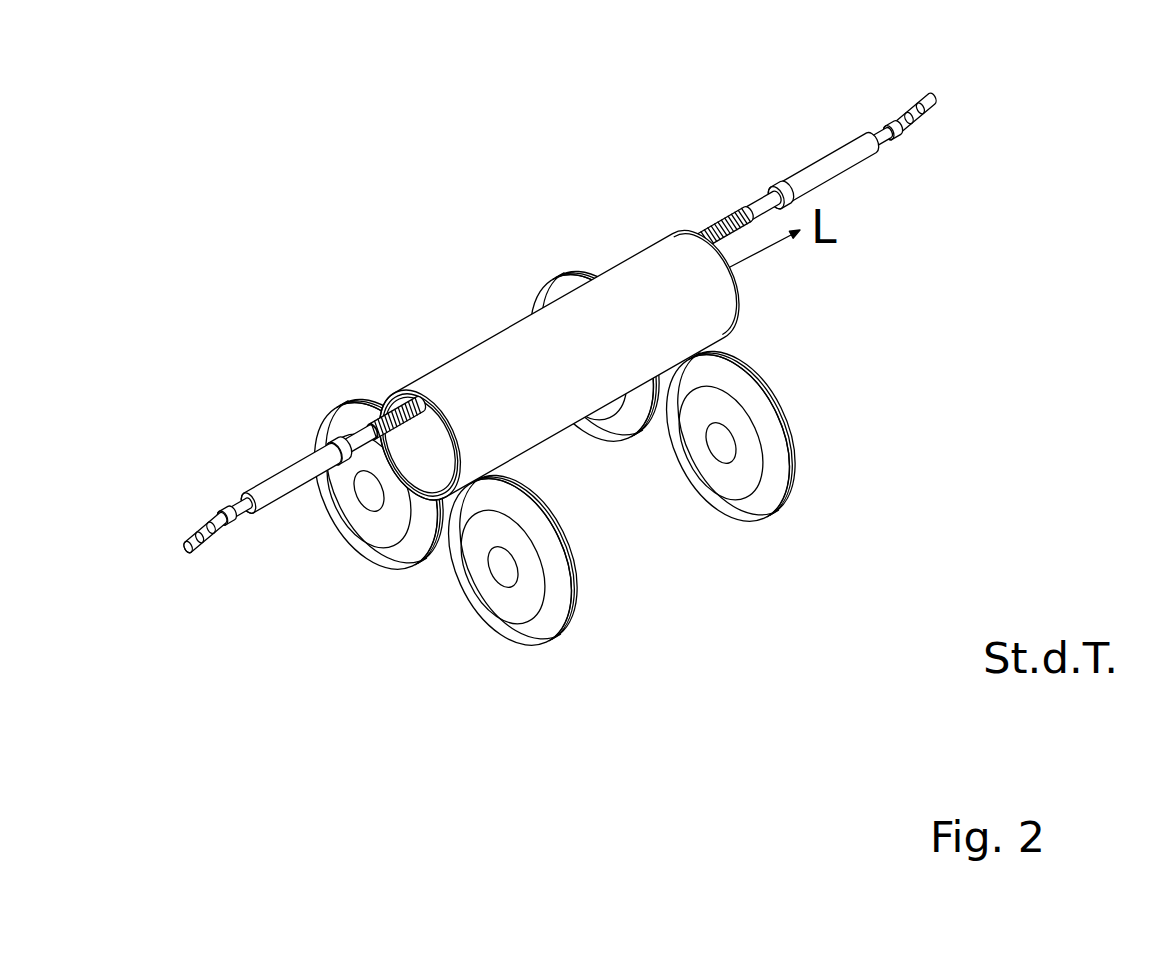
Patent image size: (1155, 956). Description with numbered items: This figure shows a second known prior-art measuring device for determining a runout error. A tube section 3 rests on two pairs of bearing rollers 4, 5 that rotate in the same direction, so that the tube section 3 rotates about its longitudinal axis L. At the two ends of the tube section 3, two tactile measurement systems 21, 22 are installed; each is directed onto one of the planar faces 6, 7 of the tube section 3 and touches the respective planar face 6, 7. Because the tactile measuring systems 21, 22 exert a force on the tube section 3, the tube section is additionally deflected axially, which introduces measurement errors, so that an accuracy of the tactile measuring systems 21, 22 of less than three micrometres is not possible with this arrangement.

The tube section 3 is at (514, 354).
The bearing rollers 4 is at (396, 556).
The bearing rollers 5 is at (620, 425).
The planar face 6 is at (440, 430).
The planar face 7 is at (742, 312).
The tactile measuring system 21 is at (380, 410).
The tactile measuring system 22 is at (767, 200).